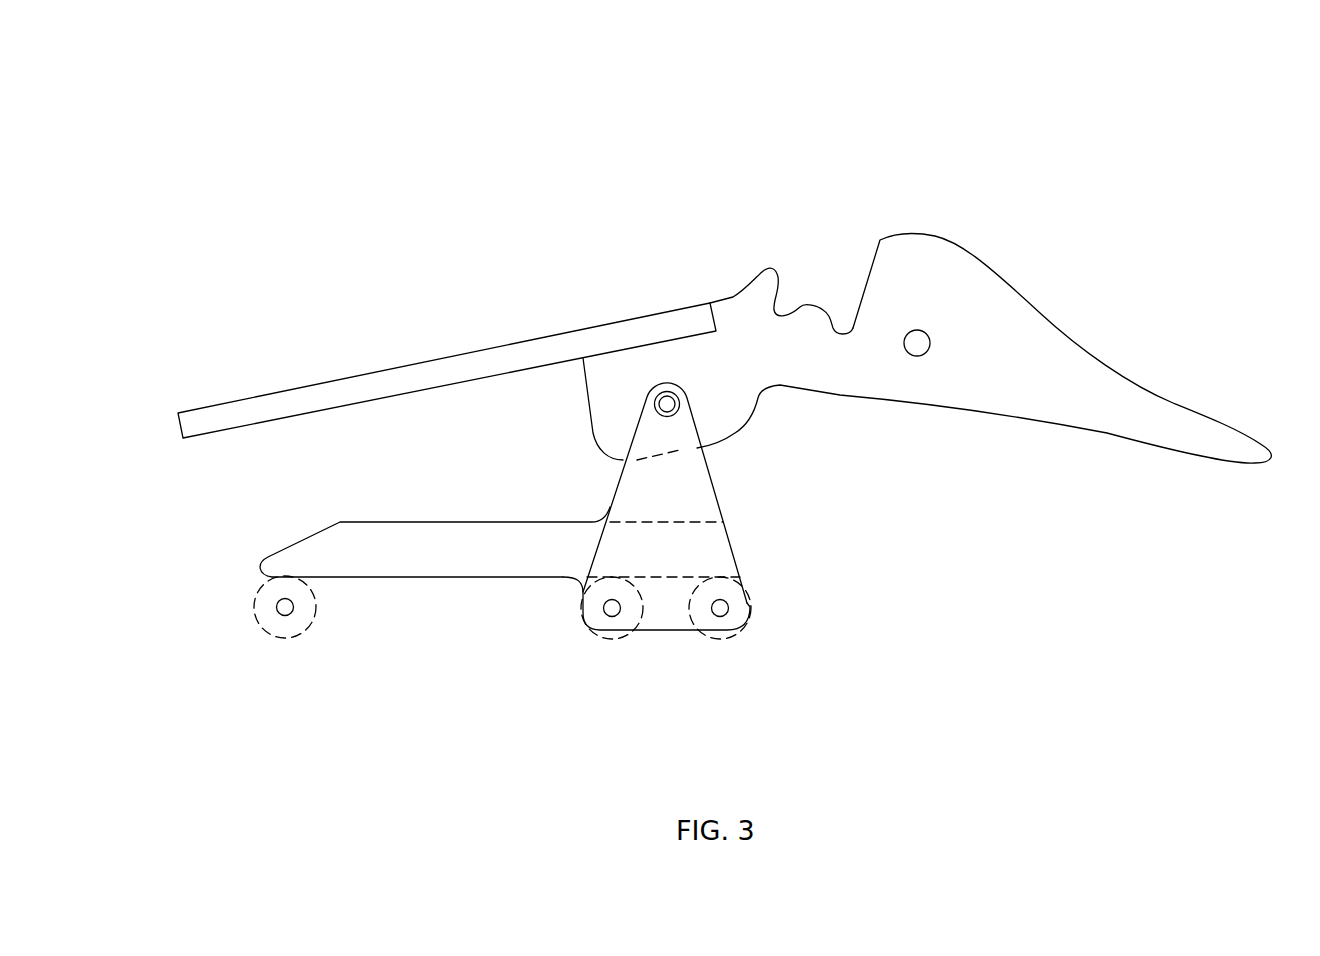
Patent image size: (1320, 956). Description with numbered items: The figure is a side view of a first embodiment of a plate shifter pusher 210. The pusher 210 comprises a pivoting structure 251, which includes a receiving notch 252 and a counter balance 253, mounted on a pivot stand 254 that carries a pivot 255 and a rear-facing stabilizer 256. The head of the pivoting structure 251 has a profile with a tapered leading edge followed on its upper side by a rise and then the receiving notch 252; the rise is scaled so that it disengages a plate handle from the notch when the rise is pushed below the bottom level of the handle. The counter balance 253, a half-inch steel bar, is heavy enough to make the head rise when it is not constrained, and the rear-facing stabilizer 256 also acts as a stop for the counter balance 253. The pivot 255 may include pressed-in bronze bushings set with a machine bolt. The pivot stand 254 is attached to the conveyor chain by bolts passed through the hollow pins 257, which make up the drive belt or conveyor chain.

The pusher 210 is at (384, 140).
The pivoting structure 251 is at (1017, 333).
The receiving notch 252 is at (823, 275).
The counter balance 253 is at (325, 392).
The pivot stand 254 is at (700, 498).
The pivot 255 is at (660, 402).
The rear-facing stabilizer 256 is at (320, 542).
The hollow pins 257 is at (583, 623).